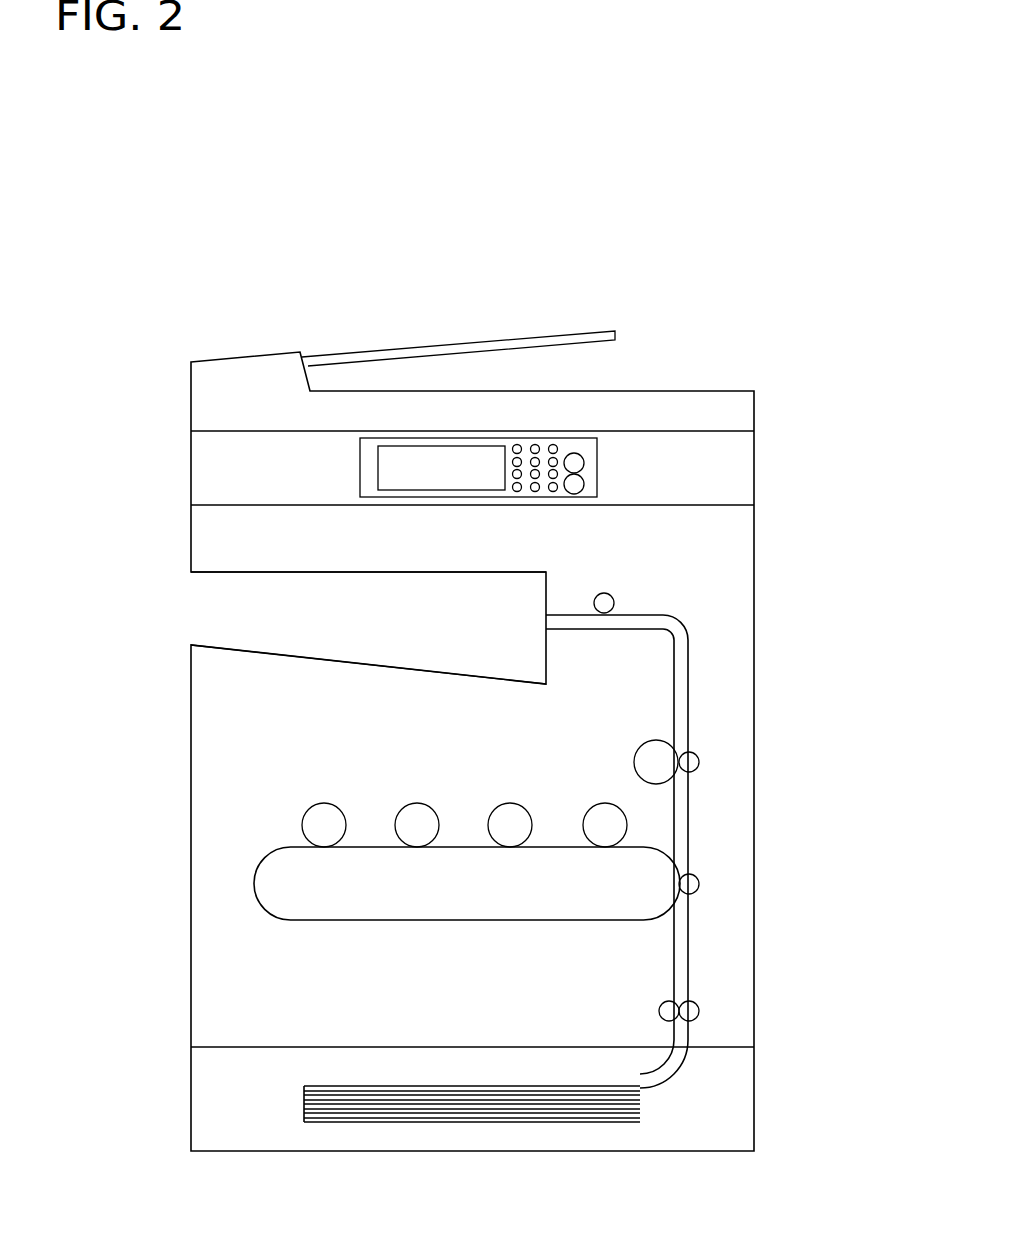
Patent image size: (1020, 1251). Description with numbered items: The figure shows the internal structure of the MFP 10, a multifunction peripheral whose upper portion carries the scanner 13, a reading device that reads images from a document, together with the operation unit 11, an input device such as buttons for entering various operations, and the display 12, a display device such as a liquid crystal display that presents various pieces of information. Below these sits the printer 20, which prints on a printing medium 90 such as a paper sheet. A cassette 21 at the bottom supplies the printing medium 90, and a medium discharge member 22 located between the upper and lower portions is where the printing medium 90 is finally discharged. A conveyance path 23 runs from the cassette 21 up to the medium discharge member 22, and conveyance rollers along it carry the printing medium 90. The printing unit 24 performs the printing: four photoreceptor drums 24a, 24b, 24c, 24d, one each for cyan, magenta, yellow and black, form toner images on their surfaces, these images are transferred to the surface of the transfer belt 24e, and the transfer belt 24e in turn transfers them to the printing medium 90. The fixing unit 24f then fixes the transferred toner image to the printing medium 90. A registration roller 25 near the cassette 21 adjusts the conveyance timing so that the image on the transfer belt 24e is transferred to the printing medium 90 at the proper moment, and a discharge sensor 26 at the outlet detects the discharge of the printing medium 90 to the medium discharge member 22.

The MFP 10 is at (645, 252).
The operation unit 11 is at (600, 472).
The display 12 is at (473, 456).
The scanner 13 is at (435, 325).
The printer 20 is at (770, 634).
The cassette 21 is at (673, 1087).
The medium discharge member 22 is at (268, 628).
The conveyance path 23 is at (688, 833).
The printing unit 24 is at (708, 774).
The photoreceptor drum 24a is at (326, 812).
The photoreceptor drum 24b is at (410, 817).
The photoreceptor drum 24c is at (503, 818).
The photoreceptor drum 24d is at (593, 823).
The transfer belt 24e is at (265, 855).
The fixing unit 24f is at (665, 750).
The registration roller 25 is at (697, 1008).
The discharge sensor 26 is at (610, 600).
The printing medium 90 is at (338, 1100).